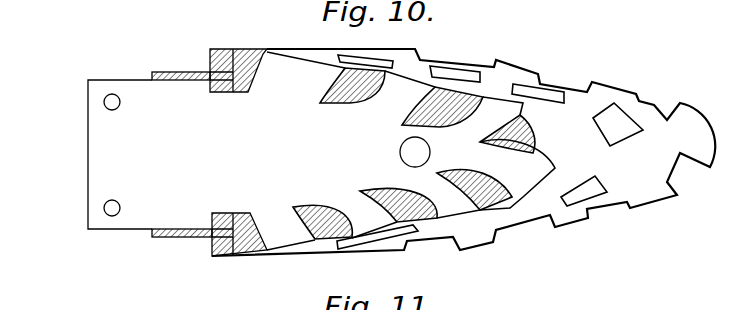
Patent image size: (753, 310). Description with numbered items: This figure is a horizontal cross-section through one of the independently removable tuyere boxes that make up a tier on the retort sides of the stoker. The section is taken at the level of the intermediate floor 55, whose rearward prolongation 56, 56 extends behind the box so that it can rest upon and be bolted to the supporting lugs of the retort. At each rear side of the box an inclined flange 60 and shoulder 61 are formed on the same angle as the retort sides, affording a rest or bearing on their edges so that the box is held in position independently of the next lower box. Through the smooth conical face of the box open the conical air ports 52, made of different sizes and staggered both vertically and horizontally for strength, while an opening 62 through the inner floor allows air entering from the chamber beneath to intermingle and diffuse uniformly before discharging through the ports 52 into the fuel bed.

The air openings 52 is at (402, 88).
The intermediate floor 55 is at (195, 173).
The prolongation of the intermediate floor 56 is at (104, 103).
The flange 60 is at (170, 72).
The shoulder 61 is at (210, 62).
The openings through inner floor 62 is at (415, 152).